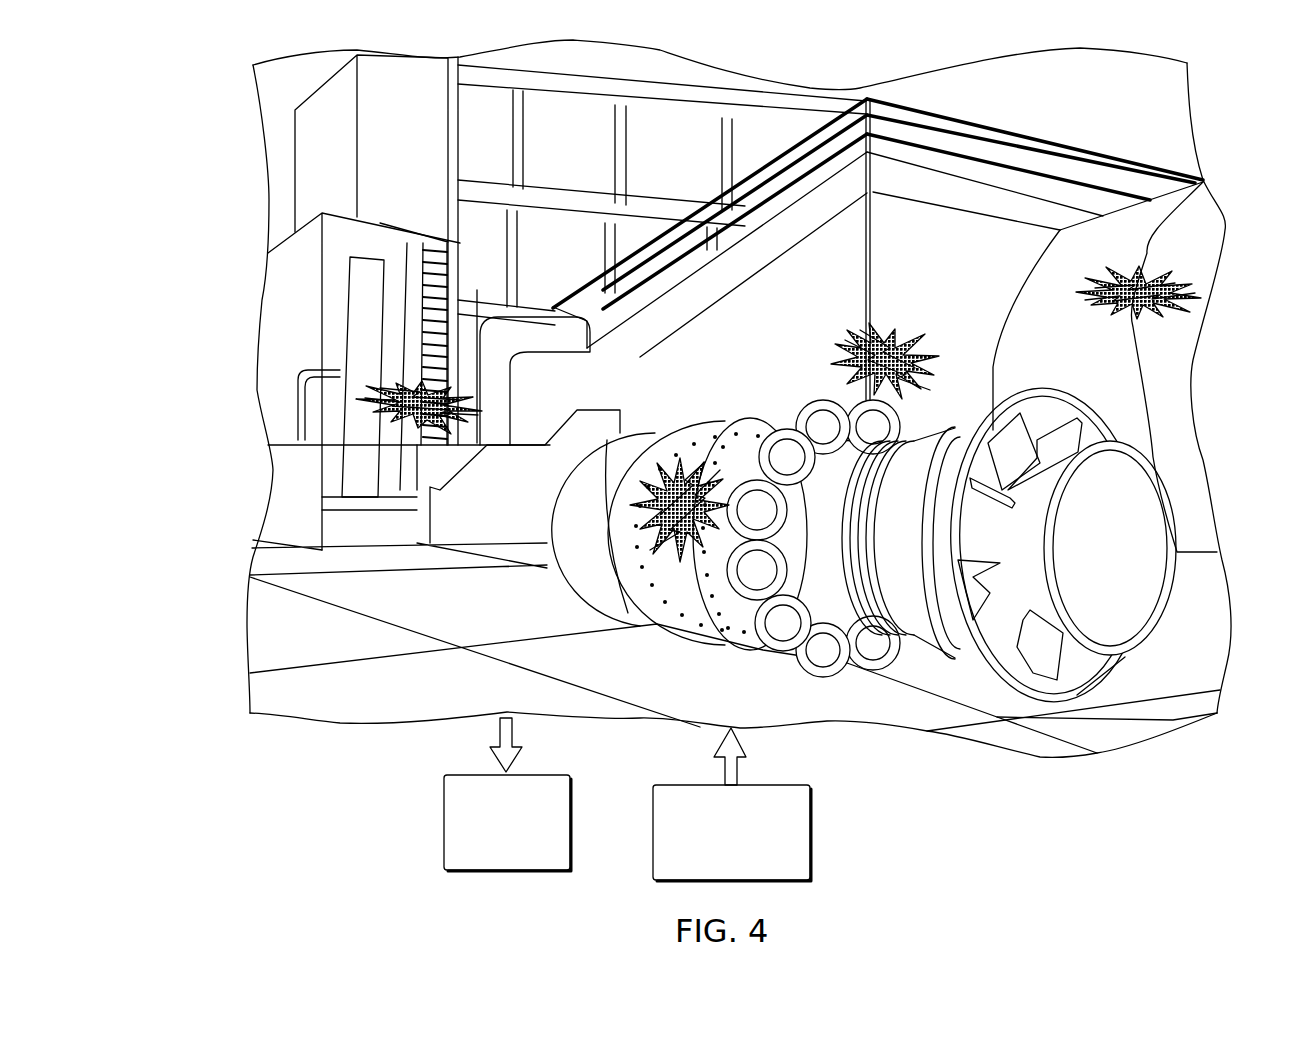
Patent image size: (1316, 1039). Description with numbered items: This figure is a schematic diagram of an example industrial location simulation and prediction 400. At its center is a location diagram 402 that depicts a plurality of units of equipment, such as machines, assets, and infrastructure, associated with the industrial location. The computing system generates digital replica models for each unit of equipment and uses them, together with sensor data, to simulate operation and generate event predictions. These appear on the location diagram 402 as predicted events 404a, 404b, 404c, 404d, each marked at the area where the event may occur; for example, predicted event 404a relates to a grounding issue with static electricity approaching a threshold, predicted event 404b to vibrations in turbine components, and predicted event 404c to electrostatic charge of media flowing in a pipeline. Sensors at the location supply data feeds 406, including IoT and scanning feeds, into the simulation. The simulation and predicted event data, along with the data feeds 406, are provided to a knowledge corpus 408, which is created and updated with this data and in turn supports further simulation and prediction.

The industrial location simulation and prediction 400 is at (1290, 48).
The location diagram 402 is at (261, 299).
The predicted event 404a is at (470, 425).
The predicted event 404b is at (705, 450).
The predicted event 404c is at (840, 318).
The predicted event 404d is at (1127, 272).
The data feeds 406 is at (443, 822).
The knowledge corpus 408 is at (813, 832).